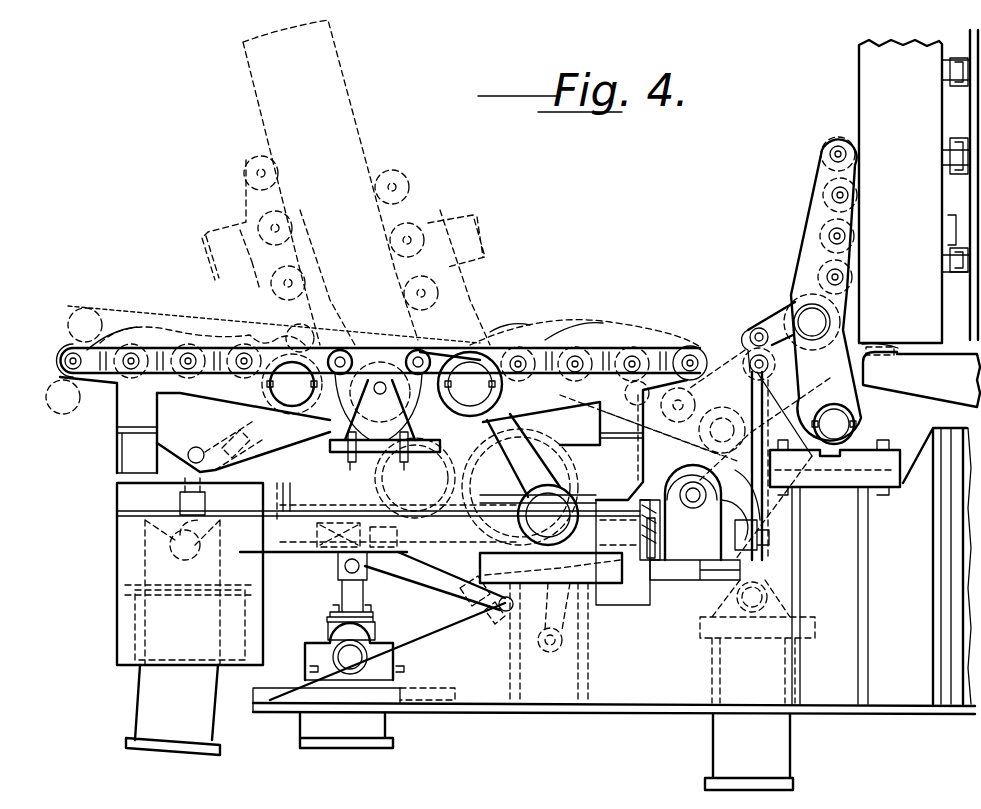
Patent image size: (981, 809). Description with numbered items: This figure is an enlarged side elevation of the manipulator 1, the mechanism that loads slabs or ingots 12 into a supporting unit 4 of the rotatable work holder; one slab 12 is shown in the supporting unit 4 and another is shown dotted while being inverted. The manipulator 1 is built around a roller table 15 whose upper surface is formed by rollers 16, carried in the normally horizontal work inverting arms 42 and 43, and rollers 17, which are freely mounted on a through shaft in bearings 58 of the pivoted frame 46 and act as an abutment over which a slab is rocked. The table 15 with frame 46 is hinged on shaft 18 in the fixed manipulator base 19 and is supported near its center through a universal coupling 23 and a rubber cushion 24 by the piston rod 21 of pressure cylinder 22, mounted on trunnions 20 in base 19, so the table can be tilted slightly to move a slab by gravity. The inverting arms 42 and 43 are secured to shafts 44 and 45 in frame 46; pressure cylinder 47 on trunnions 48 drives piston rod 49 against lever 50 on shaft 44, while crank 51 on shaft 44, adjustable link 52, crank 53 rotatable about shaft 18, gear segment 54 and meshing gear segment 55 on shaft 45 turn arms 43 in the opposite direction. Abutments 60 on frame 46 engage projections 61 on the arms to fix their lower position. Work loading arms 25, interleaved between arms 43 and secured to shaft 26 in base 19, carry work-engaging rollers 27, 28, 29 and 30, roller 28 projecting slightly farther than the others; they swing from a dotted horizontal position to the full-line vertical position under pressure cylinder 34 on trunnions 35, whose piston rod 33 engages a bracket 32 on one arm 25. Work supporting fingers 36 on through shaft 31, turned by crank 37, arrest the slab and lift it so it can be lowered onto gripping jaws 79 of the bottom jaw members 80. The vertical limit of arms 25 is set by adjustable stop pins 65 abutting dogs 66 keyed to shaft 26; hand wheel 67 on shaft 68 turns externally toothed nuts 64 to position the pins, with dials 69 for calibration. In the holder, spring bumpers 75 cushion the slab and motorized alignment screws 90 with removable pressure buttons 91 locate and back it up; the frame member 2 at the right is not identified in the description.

The manipulator 1 is at (725, 298).
The frame 2 is at (944, 621).
The work supporting unit 4 is at (968, 38).
The slab 12 is at (345, 70).
The roller table 15 is at (216, 341).
The rollers 16 is at (256, 160).
The rollers 17 is at (348, 350).
The shaft 18 is at (538, 521).
The fixed manipulator base 19 is at (637, 659).
The trunnions 20 is at (335, 652).
The piston rod 21 is at (334, 595).
The pressure cylinder 22 is at (335, 733).
The universal coupling 23 is at (318, 523).
The cushion 24 is at (398, 535).
The work loading arms 25 is at (799, 198).
The shaft 26 is at (838, 425).
The work-engaging roller 27 is at (828, 144).
The work-engaging roller 28 is at (820, 175).
The work-engaging roller 29 is at (822, 236).
The work-engaging roller 30 is at (822, 272).
The through shaft 31 is at (799, 303).
The bracket 32 is at (788, 364).
The piston rod 33 is at (723, 496).
The pressure cylinder 34 is at (742, 754).
The trunnions 35 is at (730, 595).
The work supporting fingers 36 is at (800, 380).
The crank 37 is at (772, 314).
The inverting arms 42 is at (242, 282).
The inverting arms 43 is at (470, 300).
The shaft 44 is at (282, 393).
The shaft 45 is at (460, 393).
The pivoted frame 46 is at (342, 487).
The pressure cylinder 47 is at (168, 699).
The trunnions 48 is at (137, 537).
The piston rod 49 is at (180, 490).
The lever 50 is at (225, 425).
The crank 51 is at (210, 463).
The adjustable link 52 is at (420, 577).
The crank 53 is at (575, 574).
The gear segment 54 is at (415, 478).
The meshing gear segment 55 is at (462, 478).
The bearings 58 is at (368, 417).
The abutments 60 is at (117, 445).
The projections 61 is at (236, 232).
The externally toothed nuts 64 is at (648, 510).
The adjustable stop pins 65 is at (746, 520).
The dogs 66 is at (770, 520).
The hand wheel 67 is at (680, 484).
The shaft 68 is at (693, 505).
The dials 69 is at (648, 555).
The spring bumpers 75 is at (958, 166).
The gripping jaws 79 is at (878, 347).
The bottom jaw members 80 is at (930, 388).
The alignment screws 90 is at (958, 57).
The pressure buttons 91 is at (960, 80).